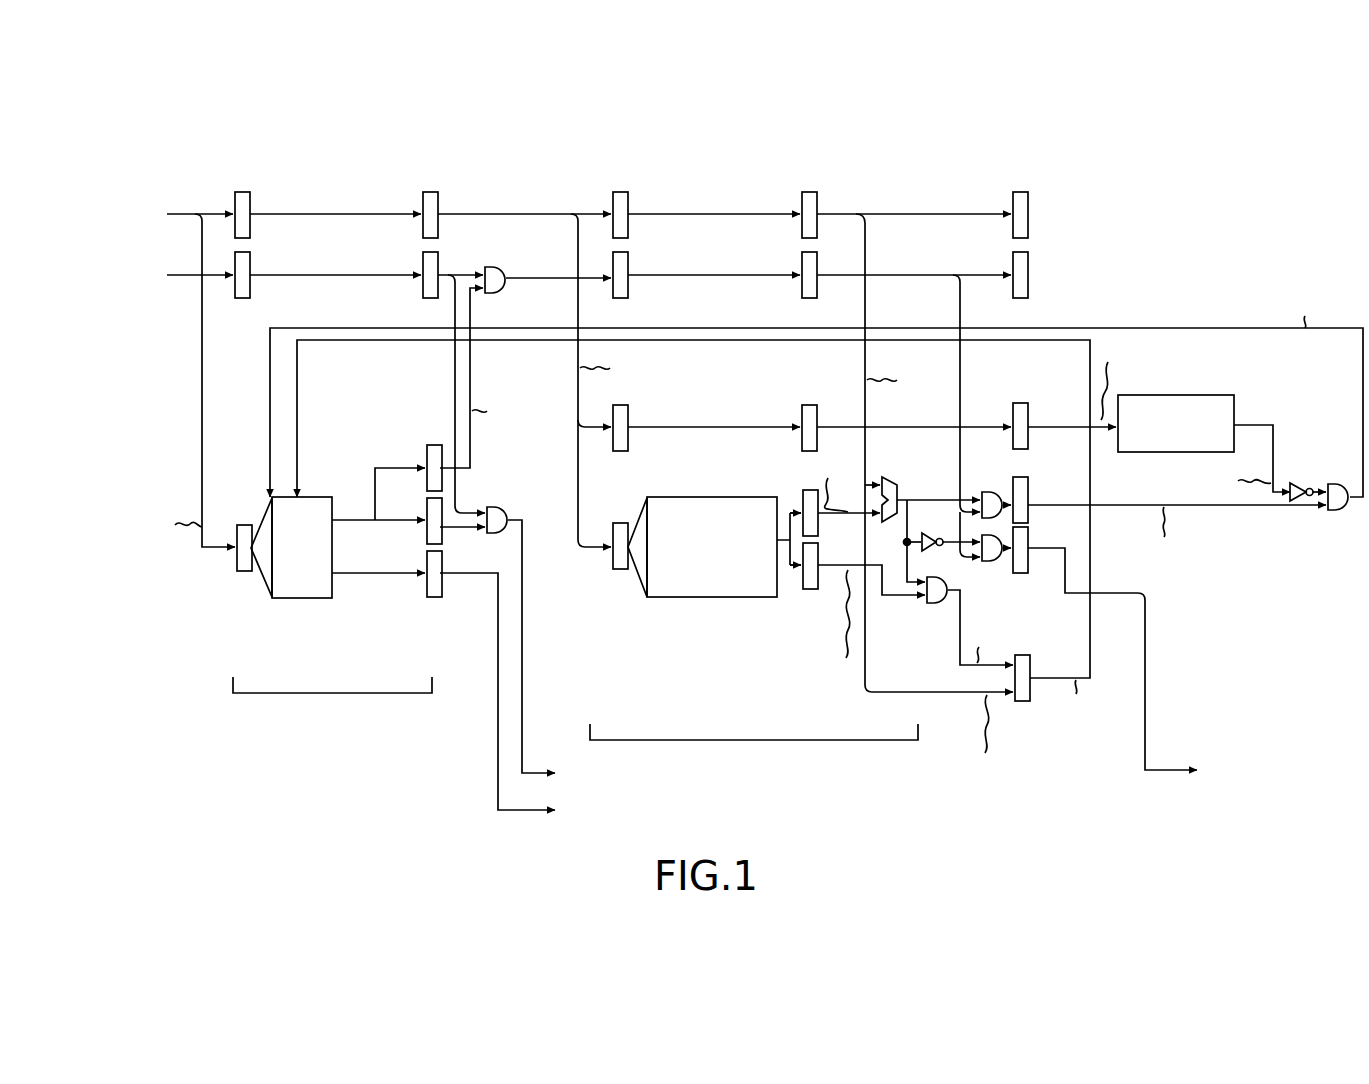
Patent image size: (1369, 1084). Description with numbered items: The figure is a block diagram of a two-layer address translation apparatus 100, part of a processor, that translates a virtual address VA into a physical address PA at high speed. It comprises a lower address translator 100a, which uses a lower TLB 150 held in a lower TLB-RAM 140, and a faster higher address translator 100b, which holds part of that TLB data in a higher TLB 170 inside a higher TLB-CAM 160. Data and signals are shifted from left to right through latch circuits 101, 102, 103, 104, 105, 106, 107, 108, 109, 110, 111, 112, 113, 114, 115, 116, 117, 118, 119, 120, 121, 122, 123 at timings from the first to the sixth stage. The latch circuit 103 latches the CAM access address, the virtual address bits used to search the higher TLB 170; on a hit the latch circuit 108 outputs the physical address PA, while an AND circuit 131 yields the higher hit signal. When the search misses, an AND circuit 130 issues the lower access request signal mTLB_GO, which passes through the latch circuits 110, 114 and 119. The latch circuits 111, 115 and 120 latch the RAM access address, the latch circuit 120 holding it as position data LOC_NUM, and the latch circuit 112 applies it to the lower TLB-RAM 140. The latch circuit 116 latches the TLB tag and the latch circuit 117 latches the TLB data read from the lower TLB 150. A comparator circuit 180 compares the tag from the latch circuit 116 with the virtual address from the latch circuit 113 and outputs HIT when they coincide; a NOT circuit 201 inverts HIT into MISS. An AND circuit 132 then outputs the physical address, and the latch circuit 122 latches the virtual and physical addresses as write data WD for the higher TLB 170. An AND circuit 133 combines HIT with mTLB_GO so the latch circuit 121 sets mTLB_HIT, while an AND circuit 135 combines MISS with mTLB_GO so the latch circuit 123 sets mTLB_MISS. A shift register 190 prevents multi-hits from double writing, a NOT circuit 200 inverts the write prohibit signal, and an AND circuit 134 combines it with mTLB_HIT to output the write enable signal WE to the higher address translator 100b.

The two-layer address translation apparatus 100 is at (1131, 236).
The lower address translator 100a is at (817, 742).
The higher address translator 100b is at (325, 696).
The latch circuit 101 is at (251, 231).
The latch circuit 102 is at (251, 291).
The latch circuit 103 is at (241, 525).
The latch circuit 104 is at (439, 231).
The latch circuit 105 is at (417, 291).
The latch circuit 106 is at (434, 445).
The latch circuit 107 is at (425, 536).
The latch circuit 108 is at (425, 591).
The latch circuit 109 is at (629, 231).
The latch circuit 110 is at (629, 291).
The latch circuit 111 is at (621, 452).
The latch circuit 112 is at (620, 523).
The latch circuit 113 is at (798, 231).
The latch circuit 114 is at (798, 291).
The latch circuit 115 is at (798, 441).
The latch circuit 116 is at (815, 525).
The latch circuit 117 is at (811, 589).
The latch circuit 118 is at (1029, 204).
The latch circuit 119 is at (1029, 263).
The latch circuit 120 is at (1029, 414).
The latch circuit 121 is at (1029, 483).
The latch circuit 122 is at (1022, 701).
The latch circuit 123 is at (1021, 573).
The AND circuit 130 is at (498, 293).
The AND circuit 131 is at (499, 507).
The AND circuit 132 is at (937, 603).
The AND circuit 133 is at (989, 492).
The AND circuit 134 is at (1338, 510).
The AND circuit 135 is at (990, 561).
The lower TLB-RAM 140 is at (708, 597).
The lower TLB 150 is at (702, 565).
The higher TLB-CAM 160 is at (297, 598).
The higher TLB 170 is at (298, 570).
The comparator circuit 180 is at (894, 480).
The shift register 190 is at (1202, 395).
The NOT circuit 200 is at (1301, 483).
The NOT circuit 201 is at (930, 552).